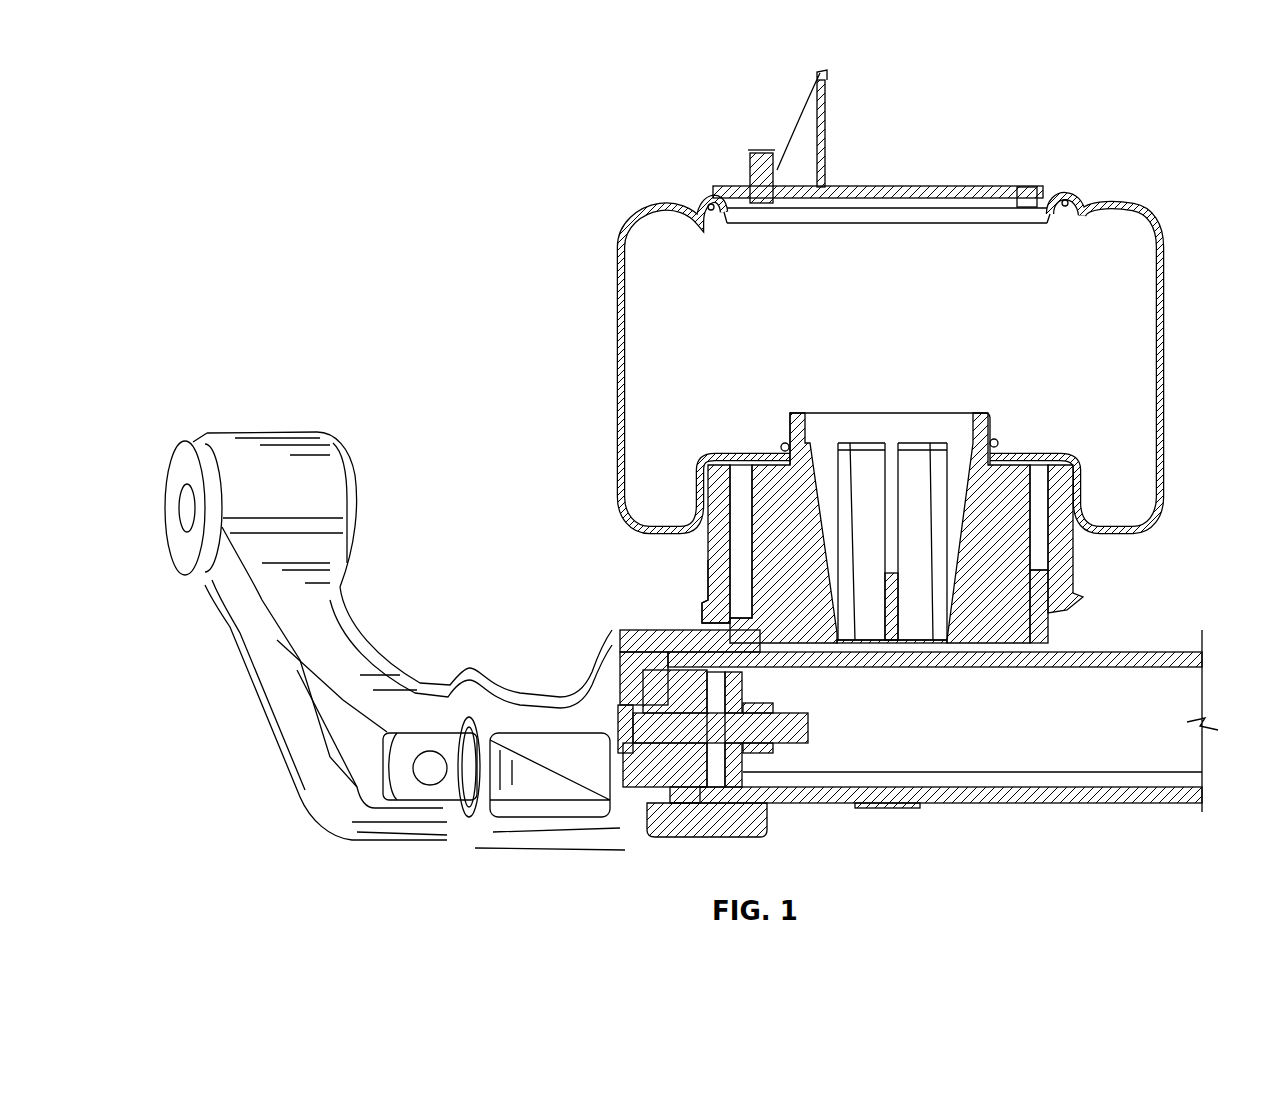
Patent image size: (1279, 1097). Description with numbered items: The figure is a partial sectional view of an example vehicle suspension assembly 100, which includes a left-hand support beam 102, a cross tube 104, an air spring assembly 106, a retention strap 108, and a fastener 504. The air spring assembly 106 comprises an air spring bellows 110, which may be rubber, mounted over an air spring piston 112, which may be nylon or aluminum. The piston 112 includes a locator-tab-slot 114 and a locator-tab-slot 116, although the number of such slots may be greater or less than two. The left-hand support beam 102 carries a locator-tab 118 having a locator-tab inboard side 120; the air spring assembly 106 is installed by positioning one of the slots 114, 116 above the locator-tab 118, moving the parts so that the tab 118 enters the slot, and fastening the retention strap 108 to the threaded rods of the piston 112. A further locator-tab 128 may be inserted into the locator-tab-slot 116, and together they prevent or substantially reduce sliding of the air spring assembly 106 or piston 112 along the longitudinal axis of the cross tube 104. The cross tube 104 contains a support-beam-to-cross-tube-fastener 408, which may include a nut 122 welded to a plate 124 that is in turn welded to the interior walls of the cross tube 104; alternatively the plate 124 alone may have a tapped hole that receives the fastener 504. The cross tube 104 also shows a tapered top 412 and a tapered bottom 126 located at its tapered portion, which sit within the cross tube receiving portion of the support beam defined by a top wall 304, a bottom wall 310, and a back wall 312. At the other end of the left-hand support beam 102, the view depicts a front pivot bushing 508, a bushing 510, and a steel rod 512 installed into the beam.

The vehicle suspension assembly 100 is at (568, 108).
The left-hand support beam 102 is at (403, 658).
The cross tube 104 is at (1035, 803).
The air spring assembly 106 is at (1090, 560).
The retention strap 108 is at (893, 810).
The air spring bellows 110 is at (1170, 370).
The air spring piston 112 is at (707, 540).
The locator-tab-slot 114 is at (740, 556).
The locator-tab-slot 116 is at (1042, 513).
The locator-tab 118 is at (715, 581).
The locator-tab inboard side 120 is at (760, 638).
The nut 122 is at (743, 753).
The plate 124 is at (743, 680).
The tapered bottom 126 is at (710, 833).
The locator-tab 128 is at (1050, 632).
The top wall 304 is at (688, 650).
The bottom wall 310 is at (733, 837).
The back wall 312 is at (643, 833).
The support-beam-to-cross-tube-fastener 408 is at (752, 763).
The tapered top 412 is at (700, 652).
The fastener 504 is at (613, 712).
The front pivot bushing 508 is at (186, 547).
The bushing 510 is at (457, 807).
The steel rod 512 is at (387, 777).